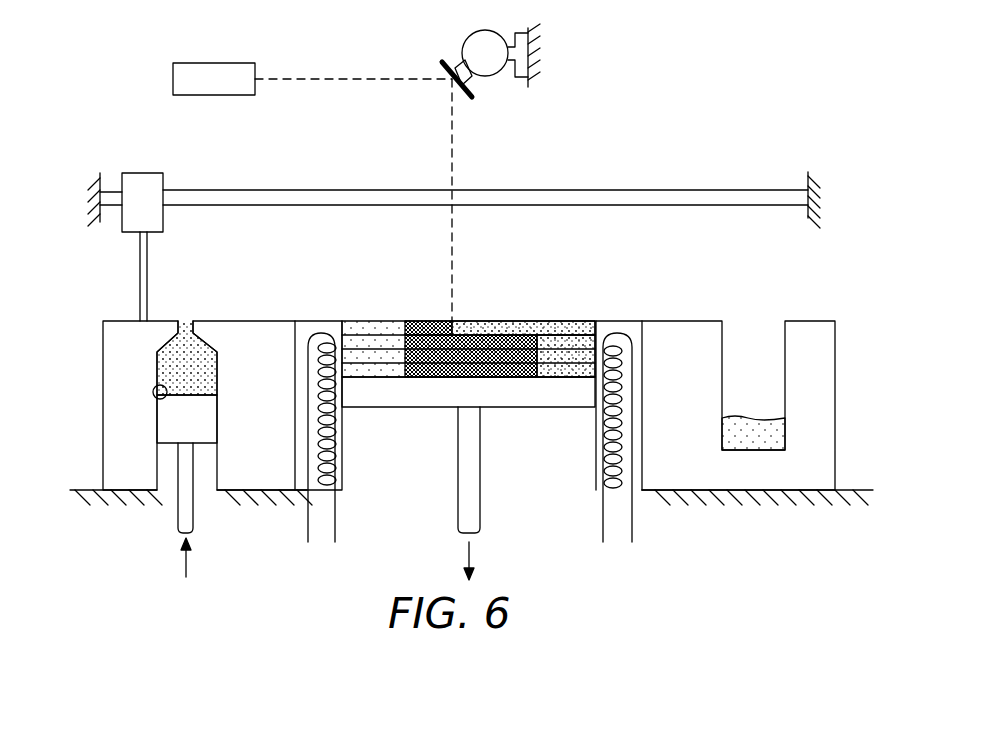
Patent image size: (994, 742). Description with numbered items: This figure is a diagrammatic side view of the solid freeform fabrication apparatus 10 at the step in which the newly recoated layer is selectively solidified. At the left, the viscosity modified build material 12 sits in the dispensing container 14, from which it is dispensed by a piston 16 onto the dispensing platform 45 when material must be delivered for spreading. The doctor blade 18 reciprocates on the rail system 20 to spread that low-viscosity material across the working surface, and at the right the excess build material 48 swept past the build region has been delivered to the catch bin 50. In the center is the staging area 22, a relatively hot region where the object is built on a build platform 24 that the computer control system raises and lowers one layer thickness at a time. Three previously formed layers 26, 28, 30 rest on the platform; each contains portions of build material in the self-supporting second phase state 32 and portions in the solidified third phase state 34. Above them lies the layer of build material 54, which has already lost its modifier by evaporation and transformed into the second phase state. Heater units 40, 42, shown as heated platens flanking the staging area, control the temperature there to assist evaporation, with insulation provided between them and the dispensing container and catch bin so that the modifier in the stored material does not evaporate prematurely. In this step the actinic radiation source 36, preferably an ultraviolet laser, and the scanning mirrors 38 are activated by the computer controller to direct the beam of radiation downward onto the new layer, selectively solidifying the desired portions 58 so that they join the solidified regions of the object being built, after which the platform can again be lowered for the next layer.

The solid freeform fabrication apparatus 10 is at (645, 89).
The viscosity modified build material 12 is at (167, 363).
The dispensing container 14 is at (157, 405).
The piston 16 is at (167, 430).
The doctor blade 18 is at (138, 272).
The rail system 20 is at (238, 190).
The staging area 22 is at (470, 263).
The build platform 24 is at (432, 397).
The previously formed layer 26 is at (387, 375).
The previously formed layer 28 is at (355, 355).
The previously formed layer 30 is at (352, 342).
The build material in second phase state 32 is at (583, 340).
The build material in third phase state 34 is at (510, 350).
The actinic radiation source 36 is at (222, 63).
The scanning mirrors 38 is at (437, 70).
The heater unit 40 is at (342, 465).
The heater unit 42 is at (597, 478).
The dispensing platform 45 is at (225, 321).
The excess build material 48 is at (753, 418).
The catch bin 50 is at (783, 337).
The layer of build material in second phase state 54 is at (560, 328).
The selectively solidified portions of the layer 58 is at (420, 320).